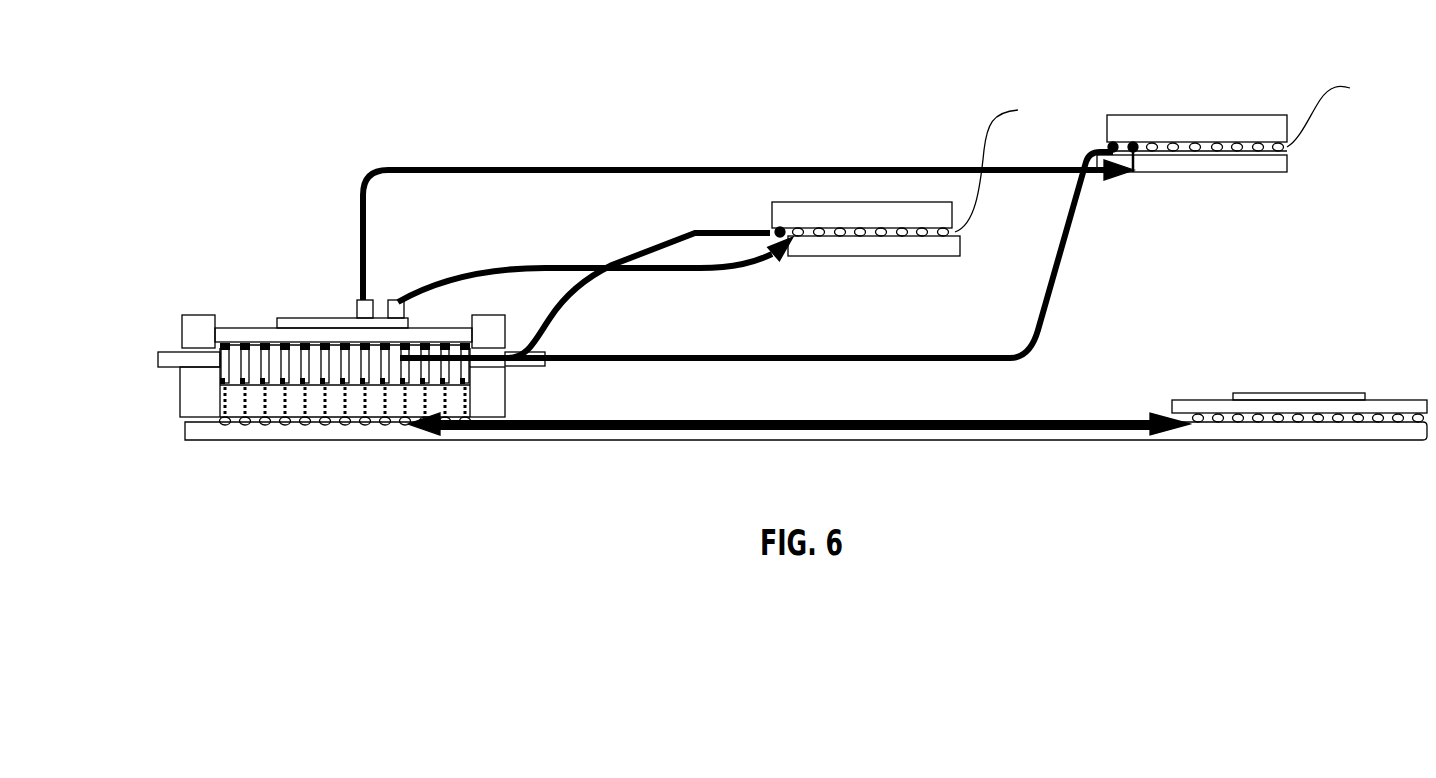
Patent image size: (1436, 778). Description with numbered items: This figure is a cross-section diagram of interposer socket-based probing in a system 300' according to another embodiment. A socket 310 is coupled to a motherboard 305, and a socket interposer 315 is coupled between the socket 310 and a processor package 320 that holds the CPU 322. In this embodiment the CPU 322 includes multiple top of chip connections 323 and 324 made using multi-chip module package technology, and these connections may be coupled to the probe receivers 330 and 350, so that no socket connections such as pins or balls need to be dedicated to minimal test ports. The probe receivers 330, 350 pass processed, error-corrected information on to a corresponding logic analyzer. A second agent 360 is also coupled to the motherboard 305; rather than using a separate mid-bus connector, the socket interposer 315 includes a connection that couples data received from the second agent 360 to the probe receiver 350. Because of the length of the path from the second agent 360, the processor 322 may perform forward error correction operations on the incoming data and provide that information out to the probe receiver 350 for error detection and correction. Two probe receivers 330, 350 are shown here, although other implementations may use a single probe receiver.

The system 300' is at (332, 44).
The motherboard 305 is at (806, 410).
The socket 310 is at (297, 384).
The socket interposer 315 is at (306, 344).
The processor package 320 is at (325, 318).
The CPU 322 is at (306, 302).
The top of chip connection 323 is at (745, 239).
The top of chip connection 324 is at (590, 277).
The probe receiver 330 is at (920, 182).
The probe receiver 350 is at (1248, 123).
The second agent 360 is at (1299, 387).